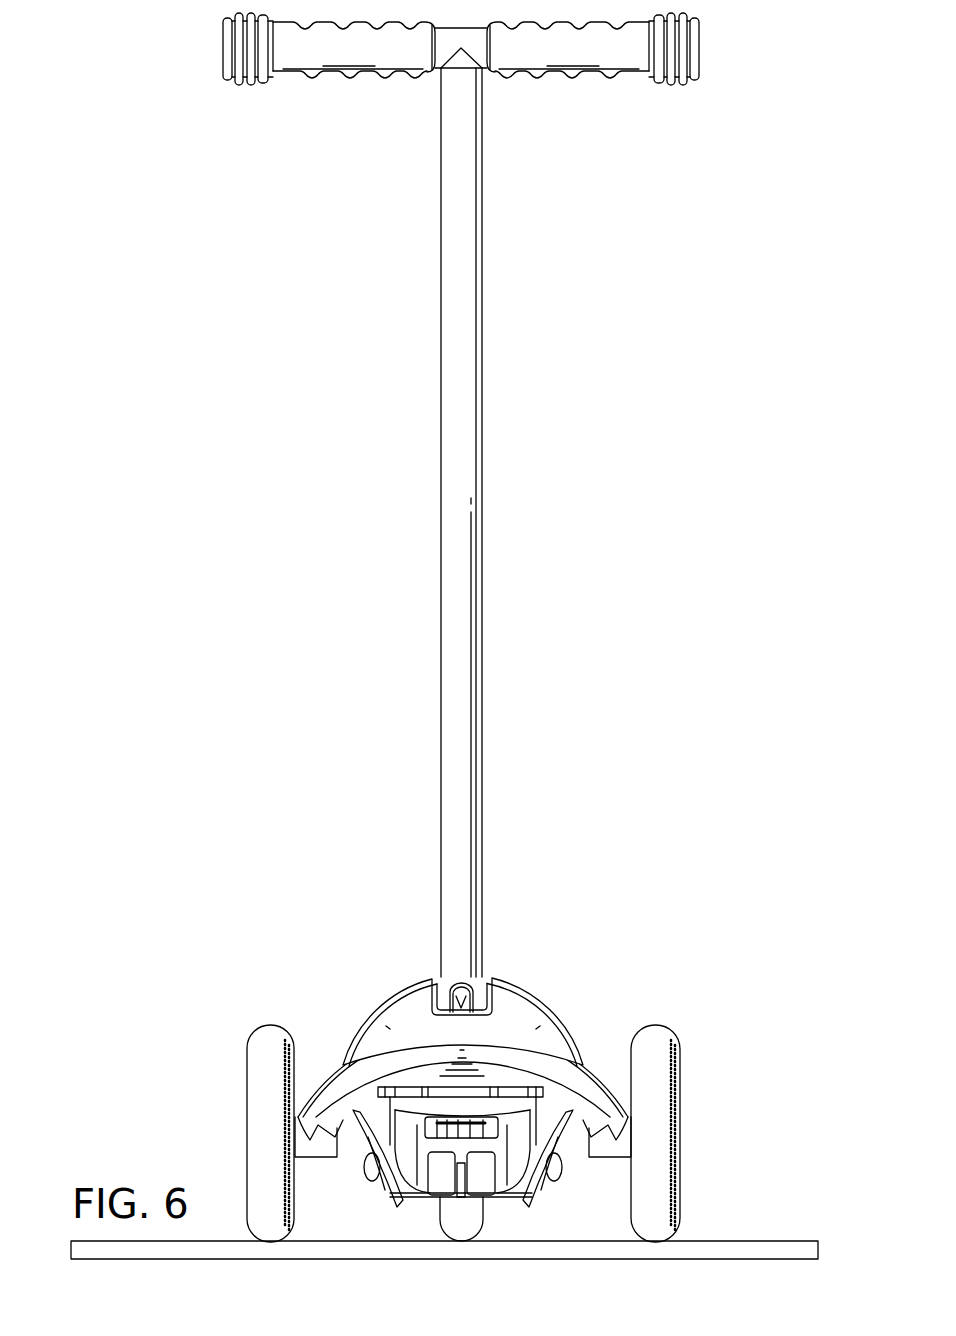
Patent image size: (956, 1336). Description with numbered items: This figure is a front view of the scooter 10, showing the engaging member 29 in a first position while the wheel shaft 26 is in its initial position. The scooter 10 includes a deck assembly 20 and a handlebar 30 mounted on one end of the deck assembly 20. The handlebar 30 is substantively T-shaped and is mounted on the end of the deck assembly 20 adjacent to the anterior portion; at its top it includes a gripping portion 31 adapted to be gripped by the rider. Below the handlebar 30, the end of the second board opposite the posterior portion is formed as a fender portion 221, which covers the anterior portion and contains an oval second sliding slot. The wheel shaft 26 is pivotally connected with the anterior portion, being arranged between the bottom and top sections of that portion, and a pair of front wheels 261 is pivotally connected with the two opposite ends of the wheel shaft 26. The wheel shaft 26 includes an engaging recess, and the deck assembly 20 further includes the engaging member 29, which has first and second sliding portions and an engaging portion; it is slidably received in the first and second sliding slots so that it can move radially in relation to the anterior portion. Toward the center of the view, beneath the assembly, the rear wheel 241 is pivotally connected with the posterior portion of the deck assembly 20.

The scooter 10 is at (176, 544).
The deck assembly 20 is at (371, 994).
The wheel shaft 26 is at (585, 1076).
The engaging member 29 is at (453, 996).
The handlebar 30 is at (447, 605).
The gripping portion 31 is at (375, 65).
The fender portion 221 is at (387, 1020).
The rear wheel 241 is at (478, 1215).
The front wheels 261 is at (258, 1106).